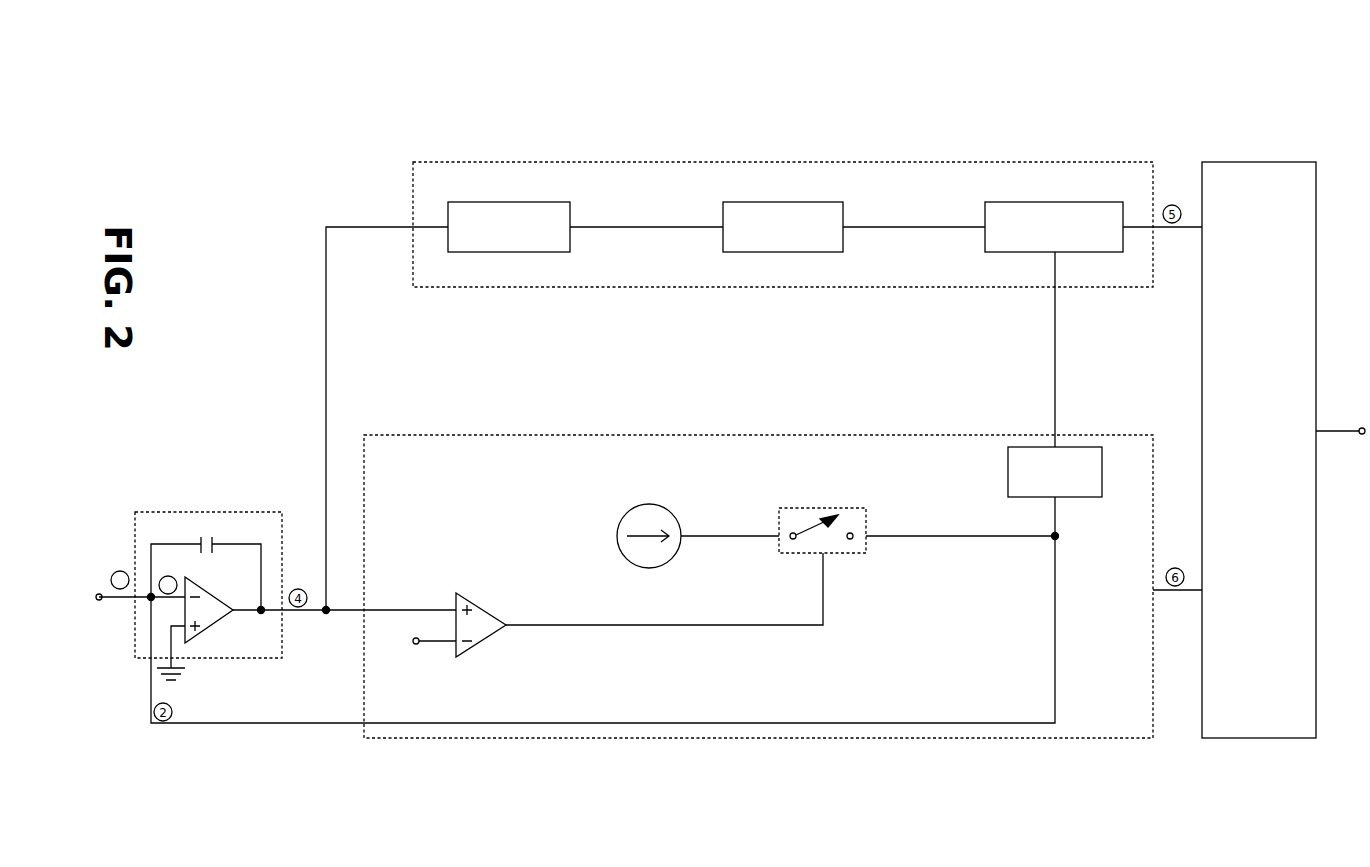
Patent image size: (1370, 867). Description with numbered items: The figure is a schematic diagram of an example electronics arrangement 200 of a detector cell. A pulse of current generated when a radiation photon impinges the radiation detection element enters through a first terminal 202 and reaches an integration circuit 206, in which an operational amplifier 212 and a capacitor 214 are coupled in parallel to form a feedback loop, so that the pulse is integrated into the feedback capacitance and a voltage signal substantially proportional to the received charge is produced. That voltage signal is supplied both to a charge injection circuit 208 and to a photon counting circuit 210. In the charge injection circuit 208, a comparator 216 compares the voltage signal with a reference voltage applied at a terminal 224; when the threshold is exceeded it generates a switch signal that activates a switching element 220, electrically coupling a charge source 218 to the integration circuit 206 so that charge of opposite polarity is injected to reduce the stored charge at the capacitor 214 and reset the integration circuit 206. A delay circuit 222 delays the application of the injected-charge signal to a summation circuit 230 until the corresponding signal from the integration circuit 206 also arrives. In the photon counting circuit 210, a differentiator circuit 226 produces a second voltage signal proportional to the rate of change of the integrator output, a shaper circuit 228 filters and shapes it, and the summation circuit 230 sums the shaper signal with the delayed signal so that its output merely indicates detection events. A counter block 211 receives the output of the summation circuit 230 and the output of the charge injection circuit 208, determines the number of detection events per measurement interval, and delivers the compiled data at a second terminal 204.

The electronics arrangement 200 is at (238, 74).
The first terminal 202 is at (99, 600).
The second terminal 204 is at (1362, 425).
The integration circuit 206 is at (208, 512).
The charge injection circuit 208 is at (762, 437).
The photon counting circuit 210 is at (782, 162).
The counter block 211 is at (1259, 161).
The operational amplifier 212 is at (209, 630).
The capacitor 214 is at (205, 556).
The comparator 216 is at (484, 642).
The charge source 218 is at (661, 566).
The switching element 220 is at (851, 554).
The delay circuit 222 is at (1078, 498).
The terminal 224 is at (418, 645).
The differentiator circuit 226 is at (510, 201).
The shaper circuit 228 is at (783, 201).
The summation circuit 230 is at (1056, 201).